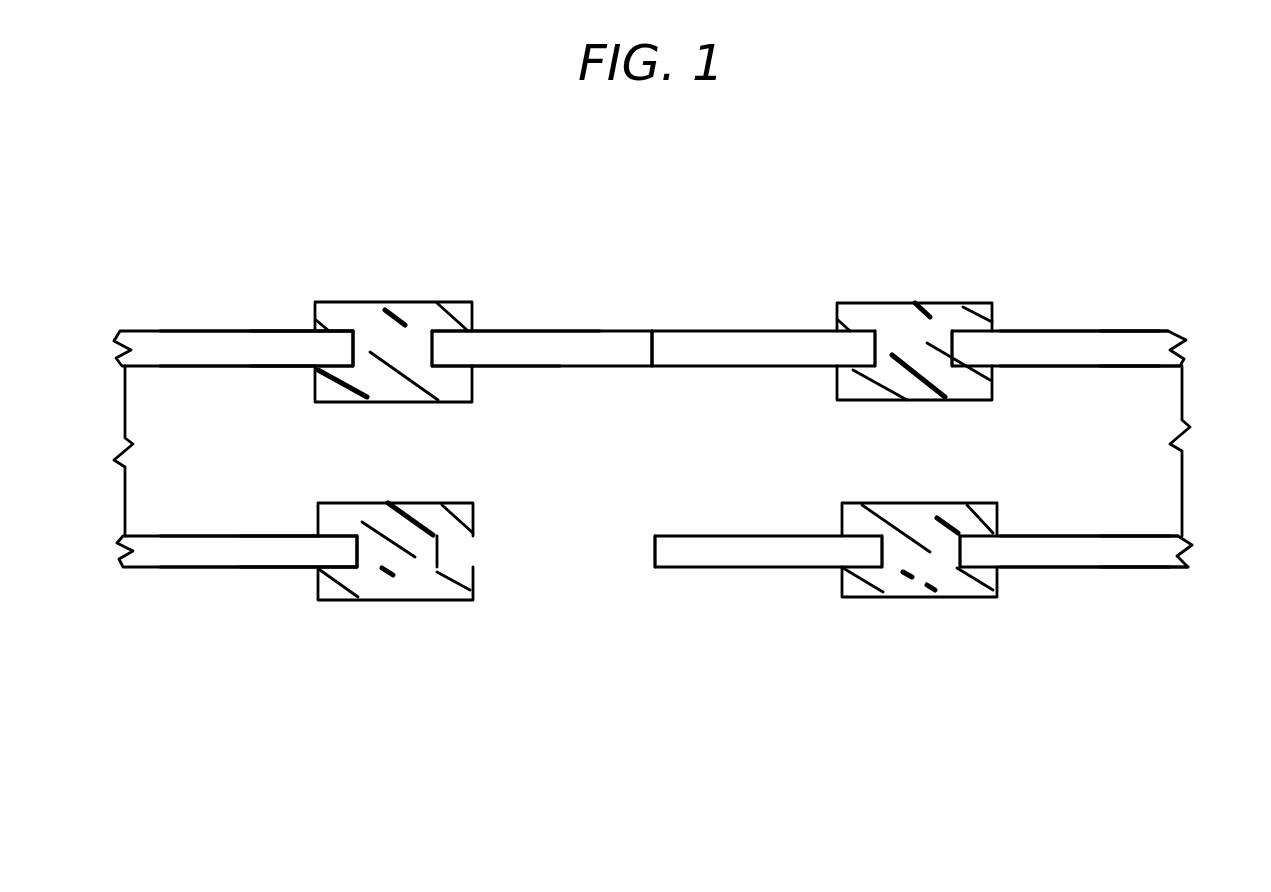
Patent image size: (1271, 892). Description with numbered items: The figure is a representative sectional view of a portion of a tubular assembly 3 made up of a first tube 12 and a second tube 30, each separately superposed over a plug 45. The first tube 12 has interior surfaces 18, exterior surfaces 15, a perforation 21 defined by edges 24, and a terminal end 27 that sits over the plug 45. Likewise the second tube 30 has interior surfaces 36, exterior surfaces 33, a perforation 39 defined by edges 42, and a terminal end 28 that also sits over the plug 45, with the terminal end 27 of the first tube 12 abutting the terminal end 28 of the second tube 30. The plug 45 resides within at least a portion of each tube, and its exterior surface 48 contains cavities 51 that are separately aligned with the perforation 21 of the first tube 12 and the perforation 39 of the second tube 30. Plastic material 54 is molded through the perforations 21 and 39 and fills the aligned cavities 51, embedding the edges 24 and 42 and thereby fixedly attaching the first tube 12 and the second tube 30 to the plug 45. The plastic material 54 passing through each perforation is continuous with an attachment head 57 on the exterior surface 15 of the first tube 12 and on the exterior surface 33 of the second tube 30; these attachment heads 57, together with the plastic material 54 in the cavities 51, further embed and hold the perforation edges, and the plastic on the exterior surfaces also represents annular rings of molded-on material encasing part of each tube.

The tubular assembly 3 is at (542, 762).
The first tube 12 is at (162, 331).
The exterior surfaces 15 is at (217, 331).
The interior surfaces 18 is at (281, 362).
The perforation 21 is at (383, 312).
The edges 24 is at (360, 348).
The terminal end 27 is at (651, 358).
The terminal end 28 is at (653, 347).
The second tube 30 is at (920, 411).
The exterior surfaces 33 is at (1070, 331).
The interior surfaces 36 is at (1132, 340).
The perforation 39 is at (915, 340).
The edges 42 is at (882, 350).
The plug 45 is at (137, 443).
The exterior surface 48 is at (250, 367).
The cavities 51 is at (420, 405).
The plastic material 54 is at (382, 385).
The attachment head 57 is at (473, 313).